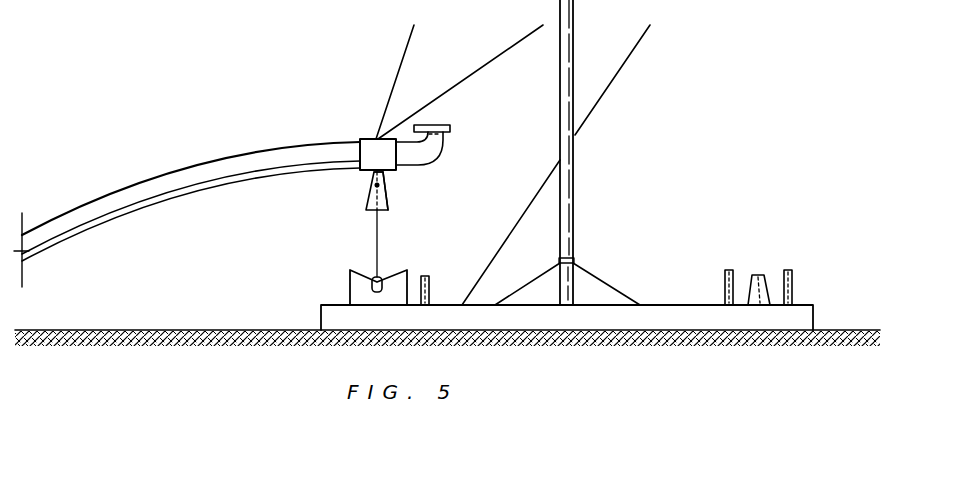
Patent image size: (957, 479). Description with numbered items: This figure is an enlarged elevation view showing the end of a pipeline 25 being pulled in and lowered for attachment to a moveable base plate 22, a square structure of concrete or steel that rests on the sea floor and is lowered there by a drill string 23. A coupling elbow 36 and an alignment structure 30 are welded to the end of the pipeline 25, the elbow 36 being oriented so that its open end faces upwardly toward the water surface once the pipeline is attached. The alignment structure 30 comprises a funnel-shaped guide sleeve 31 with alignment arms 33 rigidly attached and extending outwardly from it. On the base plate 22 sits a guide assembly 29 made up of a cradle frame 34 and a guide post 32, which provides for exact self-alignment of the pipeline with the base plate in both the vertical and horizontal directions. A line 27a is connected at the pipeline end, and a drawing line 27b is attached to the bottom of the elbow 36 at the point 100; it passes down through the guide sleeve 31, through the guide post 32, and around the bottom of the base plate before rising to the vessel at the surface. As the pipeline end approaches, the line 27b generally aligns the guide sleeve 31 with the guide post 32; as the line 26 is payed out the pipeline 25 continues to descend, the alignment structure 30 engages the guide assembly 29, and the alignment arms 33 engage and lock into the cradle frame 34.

The base plate 22 is at (660, 303).
The drill string 23 is at (574, 192).
The pipeline 25 is at (196, 157).
The line 26 is at (397, 78).
The line 27a is at (470, 74).
The drawing line 27b is at (607, 89).
The guide assembly 29 is at (335, 268).
The alignment structure 30 is at (358, 139).
The guide sleeve 31 is at (389, 201).
The guide post 32 is at (382, 277).
The alignment arms 33 is at (367, 184).
The cradle frame 34 is at (358, 293).
The coupling elbow 36 is at (446, 158).
The point 100 is at (372, 177).